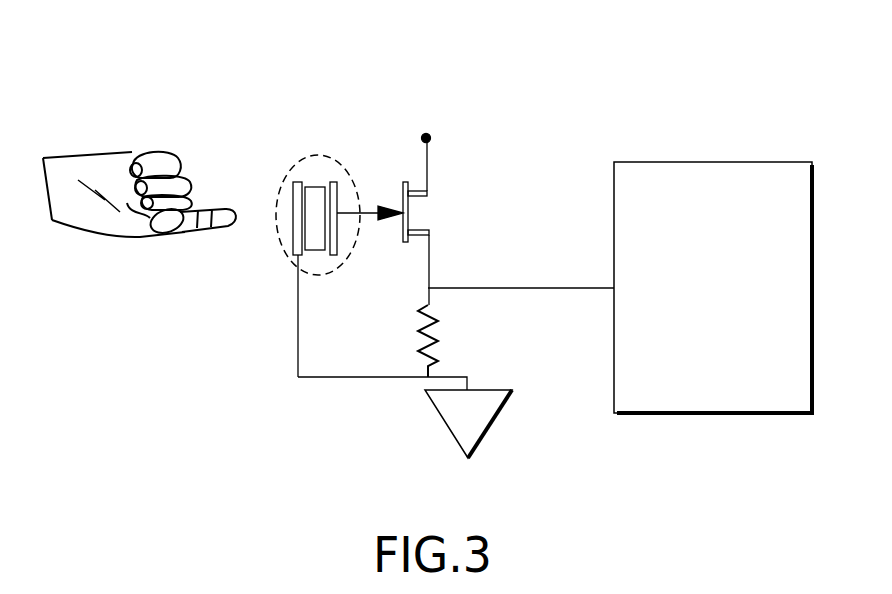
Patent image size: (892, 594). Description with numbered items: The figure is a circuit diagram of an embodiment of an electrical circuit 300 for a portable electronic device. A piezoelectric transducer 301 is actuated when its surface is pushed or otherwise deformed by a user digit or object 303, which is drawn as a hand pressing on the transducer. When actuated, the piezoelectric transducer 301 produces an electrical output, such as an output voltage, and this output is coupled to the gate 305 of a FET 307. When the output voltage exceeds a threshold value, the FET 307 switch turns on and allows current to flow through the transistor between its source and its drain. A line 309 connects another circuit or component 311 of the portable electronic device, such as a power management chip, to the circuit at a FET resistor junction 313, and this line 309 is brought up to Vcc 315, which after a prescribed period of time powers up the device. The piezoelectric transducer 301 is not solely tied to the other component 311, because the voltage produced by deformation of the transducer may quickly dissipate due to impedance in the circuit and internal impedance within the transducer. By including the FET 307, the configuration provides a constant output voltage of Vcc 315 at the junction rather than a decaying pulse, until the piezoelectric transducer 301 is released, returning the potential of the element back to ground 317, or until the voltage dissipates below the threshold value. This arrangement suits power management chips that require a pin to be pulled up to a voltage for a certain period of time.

The electrical circuit 300 is at (680, 47).
The piezoelectric transducer 301 is at (282, 253).
The user digit or object 303 is at (112, 153).
The gate 305 is at (388, 208).
The FET 307 is at (418, 212).
The line 309 is at (543, 286).
The other circuit or component 311 is at (775, 162).
The FET resistor junction 313 is at (440, 320).
The Vcc 315 is at (438, 112).
The ground 317 is at (442, 422).